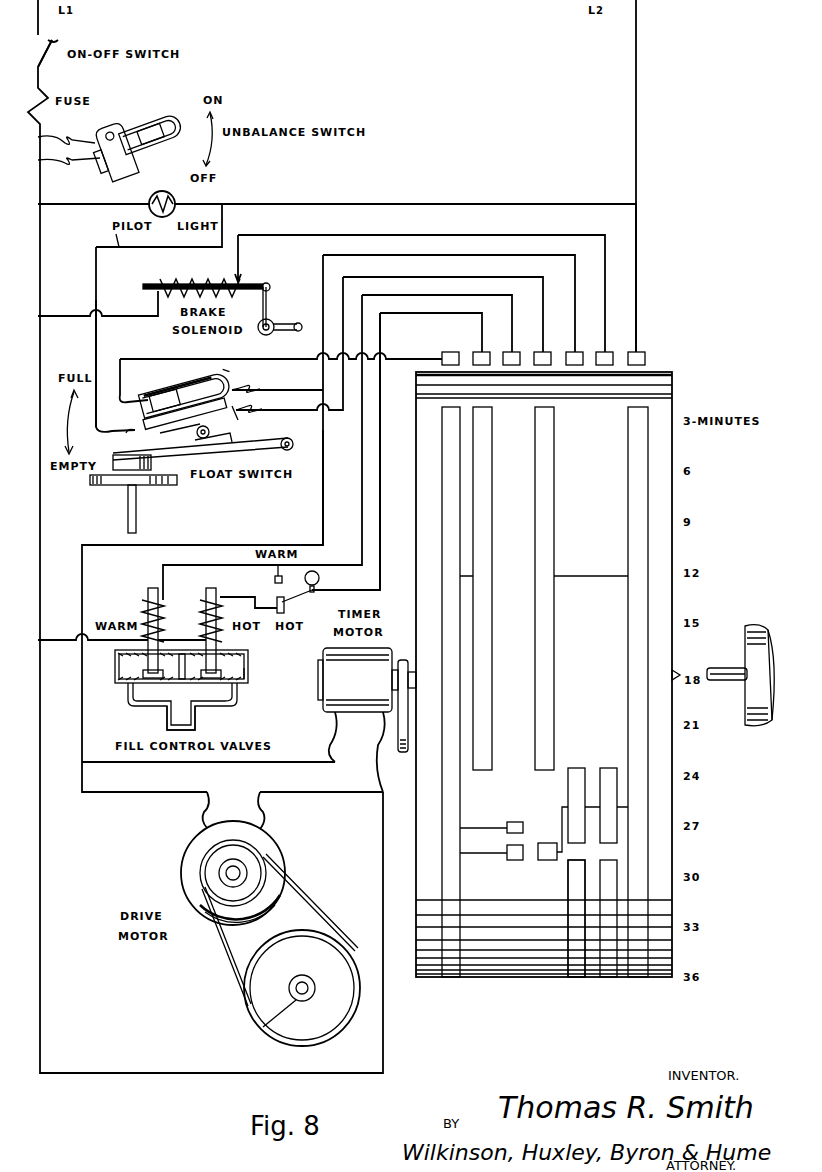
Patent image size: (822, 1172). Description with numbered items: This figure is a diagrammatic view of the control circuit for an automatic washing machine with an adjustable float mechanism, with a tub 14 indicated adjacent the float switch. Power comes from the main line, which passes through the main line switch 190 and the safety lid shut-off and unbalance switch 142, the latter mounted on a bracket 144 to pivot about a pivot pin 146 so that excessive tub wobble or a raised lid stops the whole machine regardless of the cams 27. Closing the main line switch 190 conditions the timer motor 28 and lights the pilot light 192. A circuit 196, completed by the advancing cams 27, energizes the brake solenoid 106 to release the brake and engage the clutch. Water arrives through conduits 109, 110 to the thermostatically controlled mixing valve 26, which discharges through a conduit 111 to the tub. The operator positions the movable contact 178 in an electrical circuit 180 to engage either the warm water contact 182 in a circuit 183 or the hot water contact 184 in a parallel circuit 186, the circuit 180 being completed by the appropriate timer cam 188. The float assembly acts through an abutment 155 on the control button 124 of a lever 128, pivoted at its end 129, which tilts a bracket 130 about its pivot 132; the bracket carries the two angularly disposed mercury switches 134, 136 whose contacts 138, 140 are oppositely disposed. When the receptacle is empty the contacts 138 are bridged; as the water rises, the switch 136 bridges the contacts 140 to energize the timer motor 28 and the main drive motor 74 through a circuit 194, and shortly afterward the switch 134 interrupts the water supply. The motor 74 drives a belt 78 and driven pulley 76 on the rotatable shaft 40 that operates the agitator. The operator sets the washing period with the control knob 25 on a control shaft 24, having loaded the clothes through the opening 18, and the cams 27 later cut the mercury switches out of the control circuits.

The main line switch 190 is at (58, 44).
The safety lid shut-off and unbalance switch 142 is at (178, 118).
The bracket 144 is at (122, 165).
The pivot pin 146 is at (114, 122).
The pilot light 192 is at (173, 200).
The circuit 196 is at (280, 236).
The solenoid 106 is at (167, 280).
The electrical circuit 180 is at (96, 357).
The mercury switch 134 is at (200, 392).
The mercury switch 136 is at (224, 388).
The contacts 138 is at (140, 418).
The tub 14 is at (290, 433).
The contacts 140 is at (238, 416).
The bracket 130 is at (165, 437).
The pivot 132 is at (200, 438).
The lever 128 is at (188, 457).
The pivot end 129 is at (292, 445).
The control button 124 is at (113, 462).
The abutment 155 is at (100, 483).
The circuit 194 is at (323, 532).
The circuit 183 is at (150, 587).
The parallel circuit 186 is at (218, 596).
The warm water contact 182 is at (274, 572).
The movable contact 178 is at (298, 590).
The control knob 25 is at (319, 577).
The hot water contact 184 is at (286, 605).
The conduit 109 is at (121, 675).
The conduit 110 is at (242, 668).
The thermostatically controlled mixing valve 26 is at (150, 706).
The conduit 111 is at (195, 720).
The timer motor 28 is at (335, 680).
The timer cam 188 is at (484, 654).
The opening 18 is at (676, 675).
The control shaft 24 is at (730, 682).
The motor 74 is at (183, 862).
The driven pulley 76 is at (248, 1008).
The rotatable shaft 40 is at (296, 994).
The belt 78 is at (228, 958).
The cams 27 is at (608, 978).